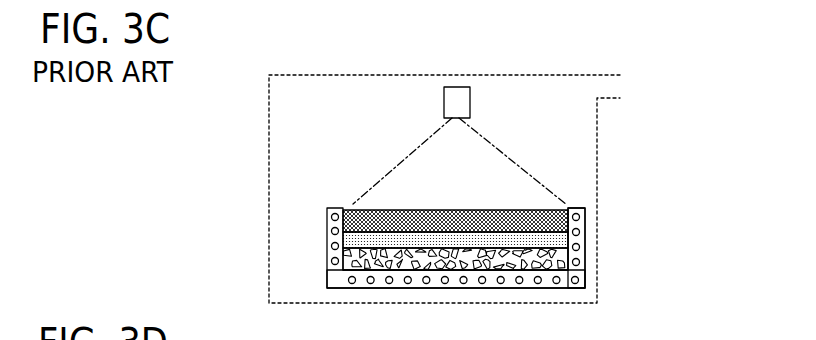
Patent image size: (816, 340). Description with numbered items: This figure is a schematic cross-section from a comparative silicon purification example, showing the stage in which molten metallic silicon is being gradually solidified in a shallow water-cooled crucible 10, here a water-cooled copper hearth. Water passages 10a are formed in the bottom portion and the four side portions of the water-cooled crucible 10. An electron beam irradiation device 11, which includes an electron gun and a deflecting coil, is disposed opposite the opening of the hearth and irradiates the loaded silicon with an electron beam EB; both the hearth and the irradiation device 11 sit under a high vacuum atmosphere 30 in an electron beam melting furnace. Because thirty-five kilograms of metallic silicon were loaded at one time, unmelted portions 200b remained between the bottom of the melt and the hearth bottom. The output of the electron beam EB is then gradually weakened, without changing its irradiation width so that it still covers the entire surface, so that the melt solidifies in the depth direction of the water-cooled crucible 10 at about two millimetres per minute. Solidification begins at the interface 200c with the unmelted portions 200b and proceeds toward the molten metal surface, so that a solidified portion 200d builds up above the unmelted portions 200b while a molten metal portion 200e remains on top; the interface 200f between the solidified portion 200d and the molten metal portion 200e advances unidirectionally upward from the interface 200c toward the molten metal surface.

The electron beam irradiation device 11 is at (470, 103).
The electron beam EB is at (513, 167).
The high vacuum atmosphere 30 is at (584, 144).
The water-cooled crucible 10 is at (501, 244).
The water passages 10a is at (580, 262).
The molten metal portion 200e is at (327, 220).
The solidified portion 200d is at (343, 241).
The interface with the unmelted portions 200c is at (343, 258).
The interface between solidified portion and molten metal portion 200f is at (576, 209).
The unmelted portions 200b is at (582, 276).